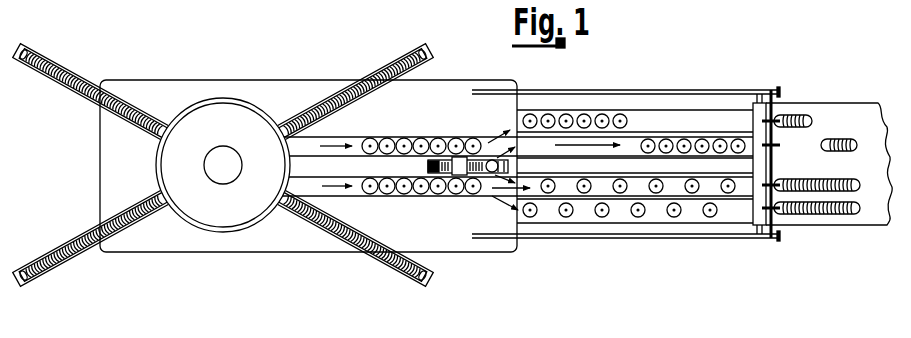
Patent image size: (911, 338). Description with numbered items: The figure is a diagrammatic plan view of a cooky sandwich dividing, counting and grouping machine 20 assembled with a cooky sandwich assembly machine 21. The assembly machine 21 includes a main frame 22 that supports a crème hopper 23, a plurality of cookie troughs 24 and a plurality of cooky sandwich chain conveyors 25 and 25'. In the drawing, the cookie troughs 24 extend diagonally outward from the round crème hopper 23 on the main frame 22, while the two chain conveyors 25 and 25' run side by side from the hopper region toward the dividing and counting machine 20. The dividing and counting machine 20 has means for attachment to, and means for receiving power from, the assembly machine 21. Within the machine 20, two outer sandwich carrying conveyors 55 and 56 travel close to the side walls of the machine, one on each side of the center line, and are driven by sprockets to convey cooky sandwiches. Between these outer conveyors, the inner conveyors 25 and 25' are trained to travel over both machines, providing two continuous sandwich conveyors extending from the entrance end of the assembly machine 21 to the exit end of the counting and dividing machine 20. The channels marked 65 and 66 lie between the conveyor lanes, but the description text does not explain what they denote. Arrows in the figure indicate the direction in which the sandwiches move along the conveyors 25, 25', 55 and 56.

The cooky sandwich dividing and counting machine 20 is at (717, 240).
The cooky sandwich assembly machine 21 is at (457, 243).
The main frame 22 is at (235, 80).
The crème hopper 23 is at (232, 222).
The cookie troughs 24 is at (100, 84).
The cooky sandwich chain conveyor 25 is at (511, 133).
The cooky sandwich chain conveyor 25' is at (511, 204).
The outer conveyor chain unit 55 is at (710, 118).
The conveyor 56 is at (627, 213).
The intermediate upper channel 65 is at (587, 148).
The intermediate lower channel 66 is at (610, 183).